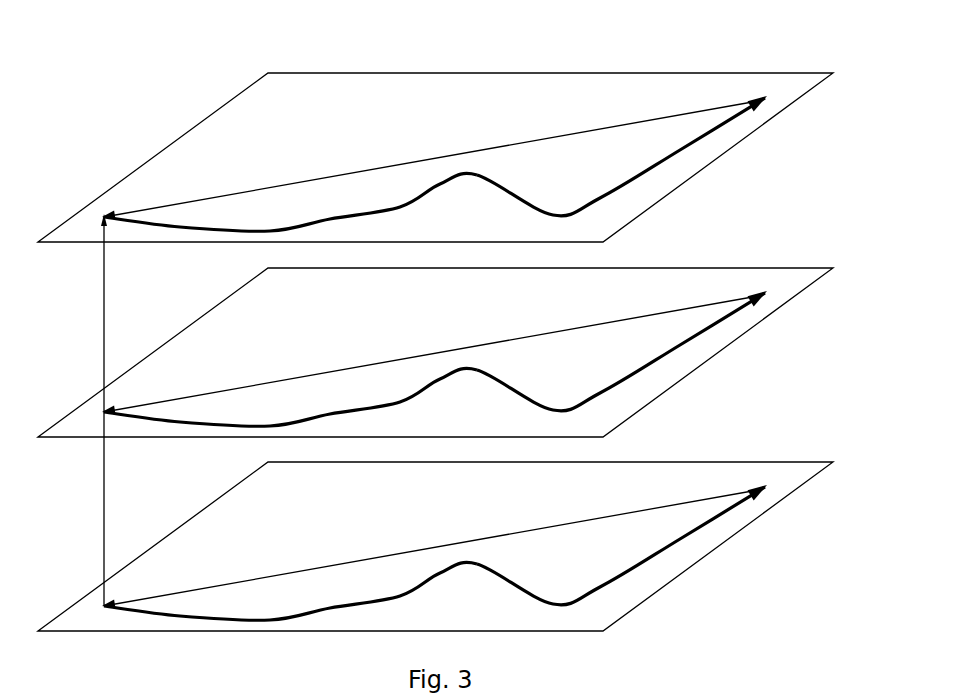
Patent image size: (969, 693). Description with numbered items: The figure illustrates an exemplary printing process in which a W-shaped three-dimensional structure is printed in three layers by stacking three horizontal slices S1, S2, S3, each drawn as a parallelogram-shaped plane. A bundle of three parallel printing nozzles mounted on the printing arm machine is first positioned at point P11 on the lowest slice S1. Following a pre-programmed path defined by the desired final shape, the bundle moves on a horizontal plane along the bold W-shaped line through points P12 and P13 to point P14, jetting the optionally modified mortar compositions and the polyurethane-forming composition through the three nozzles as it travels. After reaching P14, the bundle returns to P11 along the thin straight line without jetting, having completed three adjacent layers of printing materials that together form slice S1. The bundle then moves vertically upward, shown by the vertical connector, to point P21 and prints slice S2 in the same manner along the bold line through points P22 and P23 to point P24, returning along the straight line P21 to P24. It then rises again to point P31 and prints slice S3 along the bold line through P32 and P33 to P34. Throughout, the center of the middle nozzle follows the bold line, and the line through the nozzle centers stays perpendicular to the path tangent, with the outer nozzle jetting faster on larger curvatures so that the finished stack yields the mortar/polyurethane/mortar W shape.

The slice S1 is at (451, 536).
The slice S2 is at (451, 342).
The slice S3 is at (451, 147).
The point P11 is at (124, 617).
The point P12 is at (290, 597).
The point P13 is at (621, 548).
The point P14 is at (780, 498).
The point P21 is at (124, 423).
The point P22 is at (290, 403).
The point P23 is at (621, 354).
The point P24 is at (780, 304).
The point P31 is at (124, 228).
The point P32 is at (290, 208).
The point P33 is at (621, 159).
The point P34 is at (780, 109).